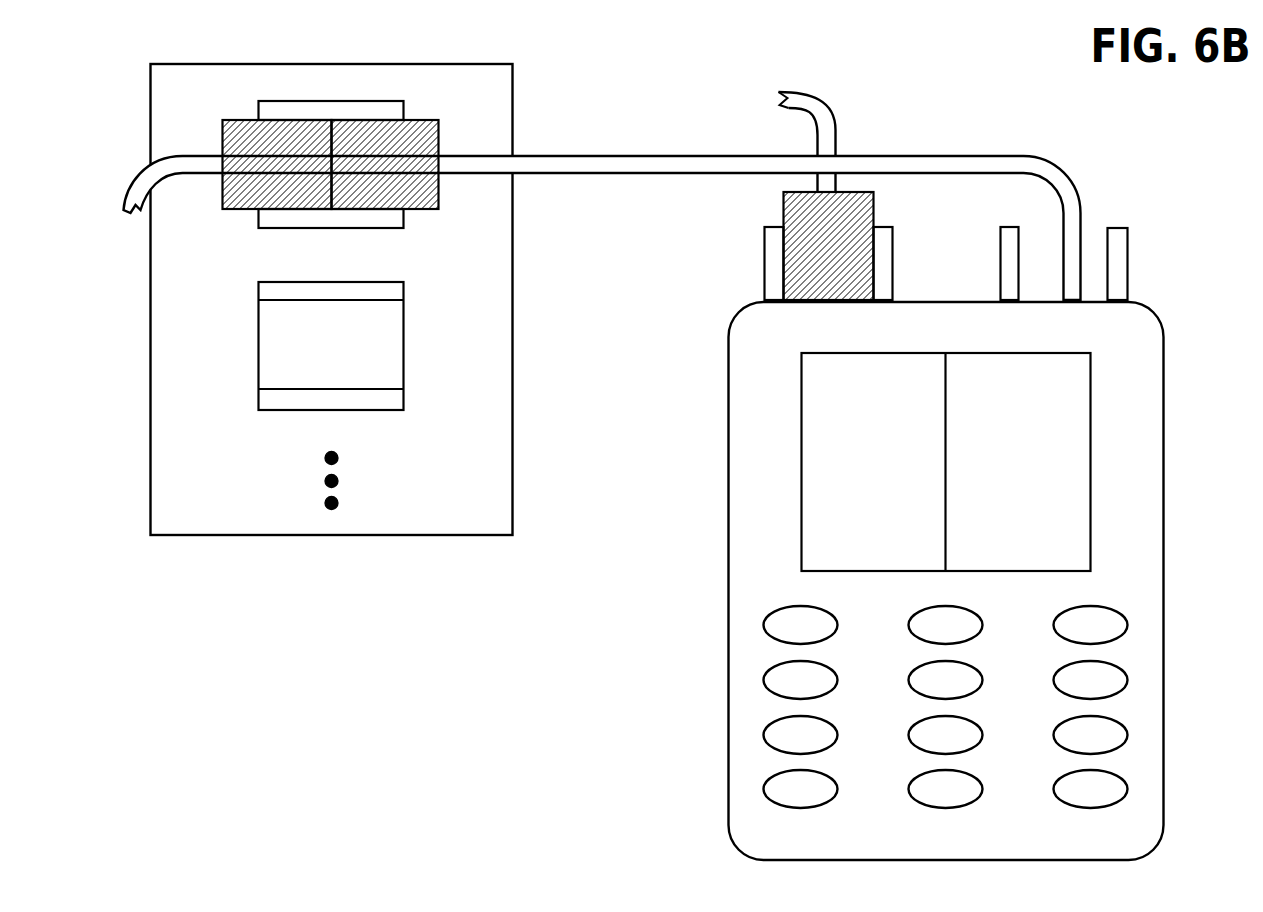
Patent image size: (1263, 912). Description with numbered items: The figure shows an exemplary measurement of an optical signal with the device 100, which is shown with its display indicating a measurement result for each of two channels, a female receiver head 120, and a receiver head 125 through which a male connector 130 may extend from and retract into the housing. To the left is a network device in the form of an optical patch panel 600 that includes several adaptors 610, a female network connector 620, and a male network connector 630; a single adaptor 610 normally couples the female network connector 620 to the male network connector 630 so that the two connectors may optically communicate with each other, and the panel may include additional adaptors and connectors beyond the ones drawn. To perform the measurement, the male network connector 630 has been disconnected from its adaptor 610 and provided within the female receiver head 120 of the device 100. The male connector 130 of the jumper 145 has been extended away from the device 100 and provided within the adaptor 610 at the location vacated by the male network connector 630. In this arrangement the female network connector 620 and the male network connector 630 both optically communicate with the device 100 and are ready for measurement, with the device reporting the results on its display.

The device 100 is at (726, 515).
The female receiver head 120 is at (762, 262).
The receiver head 125 is at (1129, 262).
The male connector 130 is at (413, 137).
The jumper 145 is at (675, 165).
The optical patch panel 600 is at (483, 101).
The adaptor 610 is at (293, 110).
The female network connector 620 is at (240, 137).
The male network connector 630 is at (800, 227).